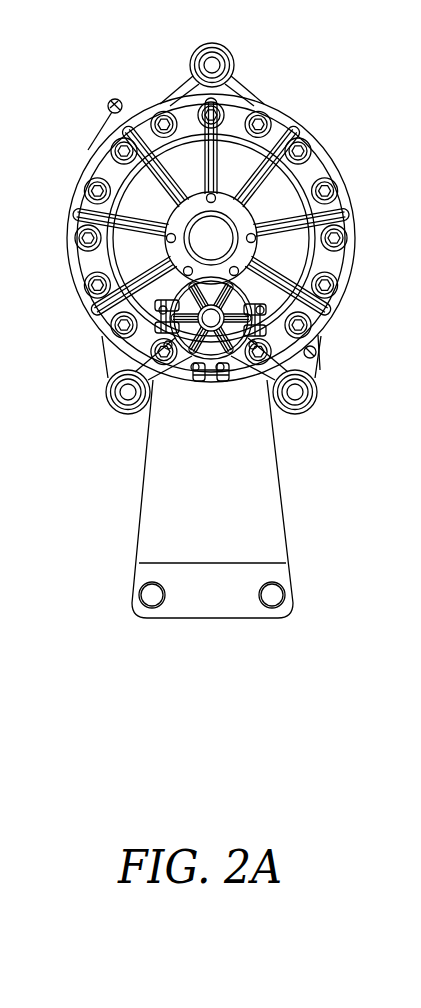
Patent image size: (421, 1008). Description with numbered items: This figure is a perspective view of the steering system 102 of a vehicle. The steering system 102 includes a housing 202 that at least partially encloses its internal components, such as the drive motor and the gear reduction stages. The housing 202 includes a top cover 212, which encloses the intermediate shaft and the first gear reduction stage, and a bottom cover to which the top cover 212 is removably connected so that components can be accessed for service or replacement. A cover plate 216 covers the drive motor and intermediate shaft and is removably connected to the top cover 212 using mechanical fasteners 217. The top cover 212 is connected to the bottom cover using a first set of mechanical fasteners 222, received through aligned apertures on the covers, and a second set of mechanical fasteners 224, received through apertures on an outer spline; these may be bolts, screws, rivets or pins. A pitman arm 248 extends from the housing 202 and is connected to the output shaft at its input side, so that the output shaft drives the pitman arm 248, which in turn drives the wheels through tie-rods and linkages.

The steering system 102 is at (130, 84).
The housing 202 is at (64, 178).
The top cover 212 is at (145, 263).
The cover plate 216 is at (182, 330).
The mechanical fasteners 217 is at (168, 239).
The first set of mechanical fasteners 222 is at (108, 112).
The second set of mechanical fasteners 224 is at (326, 178).
The pitman arm 248 is at (155, 509).